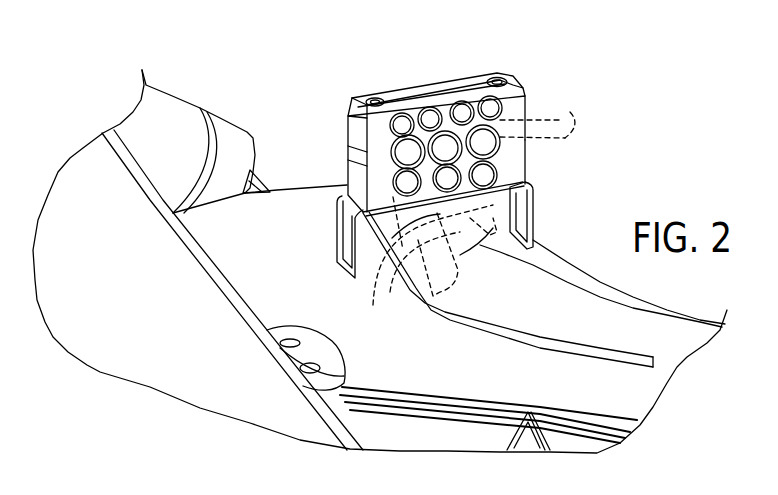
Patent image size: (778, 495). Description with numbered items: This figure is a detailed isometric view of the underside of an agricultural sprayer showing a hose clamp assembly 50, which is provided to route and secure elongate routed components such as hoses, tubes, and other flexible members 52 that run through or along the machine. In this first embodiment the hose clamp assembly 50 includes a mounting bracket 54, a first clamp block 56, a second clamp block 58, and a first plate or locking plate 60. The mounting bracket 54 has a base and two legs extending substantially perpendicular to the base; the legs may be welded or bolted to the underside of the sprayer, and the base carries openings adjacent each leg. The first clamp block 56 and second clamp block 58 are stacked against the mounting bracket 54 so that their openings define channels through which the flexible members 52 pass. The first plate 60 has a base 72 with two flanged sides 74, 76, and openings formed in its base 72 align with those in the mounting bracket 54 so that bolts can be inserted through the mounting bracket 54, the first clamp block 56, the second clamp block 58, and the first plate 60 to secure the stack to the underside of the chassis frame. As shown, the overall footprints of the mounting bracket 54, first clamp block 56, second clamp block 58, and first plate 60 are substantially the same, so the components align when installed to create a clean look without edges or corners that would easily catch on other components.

The hose clamp assembly 50 is at (321, 74).
The flexible members 52 is at (552, 122).
The mounting bracket 54 is at (542, 219).
The first clamp block 56 is at (537, 157).
The second clamp block 58 is at (537, 100).
The first plate 60 is at (479, 123).
The base 72 is at (428, 92).
The flanged side 74 is at (407, 78).
The flanged side 76 is at (455, 108).